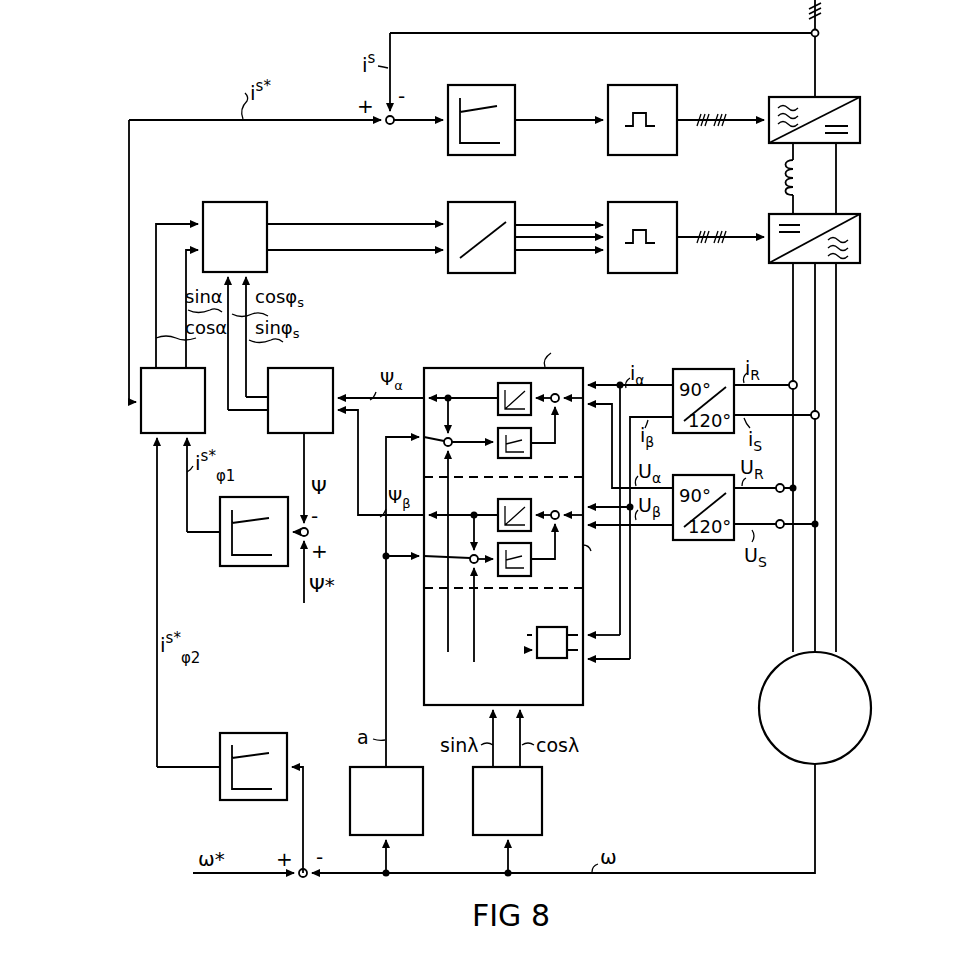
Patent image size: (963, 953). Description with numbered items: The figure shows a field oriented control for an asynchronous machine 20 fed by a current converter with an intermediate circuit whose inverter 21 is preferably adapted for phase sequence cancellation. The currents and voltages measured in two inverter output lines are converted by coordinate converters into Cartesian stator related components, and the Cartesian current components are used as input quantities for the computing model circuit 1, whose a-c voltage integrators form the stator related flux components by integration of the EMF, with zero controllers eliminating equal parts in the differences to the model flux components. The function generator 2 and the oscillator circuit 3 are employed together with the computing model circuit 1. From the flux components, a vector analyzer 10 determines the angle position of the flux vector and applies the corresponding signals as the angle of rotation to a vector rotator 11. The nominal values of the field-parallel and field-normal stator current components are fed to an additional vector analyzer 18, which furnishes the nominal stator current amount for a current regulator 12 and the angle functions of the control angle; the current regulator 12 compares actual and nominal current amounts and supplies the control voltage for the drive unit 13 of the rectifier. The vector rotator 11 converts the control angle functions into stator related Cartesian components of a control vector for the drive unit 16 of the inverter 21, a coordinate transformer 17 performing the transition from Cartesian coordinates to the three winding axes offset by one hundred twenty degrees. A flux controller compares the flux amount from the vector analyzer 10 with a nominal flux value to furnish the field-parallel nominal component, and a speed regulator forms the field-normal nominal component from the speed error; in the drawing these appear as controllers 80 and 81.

The computing model circuit 1 is at (584, 681).
The function generator 2 is at (431, 797).
The oscillator circuit 3 is at (542, 796).
The vector analyzer 10 is at (318, 367).
The vector rotator 11 is at (240, 201).
The current regulator 12 is at (488, 70).
The drive unit 13 is at (636, 84).
The drive unit 16 is at (636, 201).
The coordinate transformer 17 is at (477, 201).
The vector analyzer 18 is at (205, 421).
The asynchronous machine 20 is at (838, 763).
The inverter 21 is at (776, 264).
The flux controller 80 is at (238, 567).
The speed controller 81 is at (268, 732).